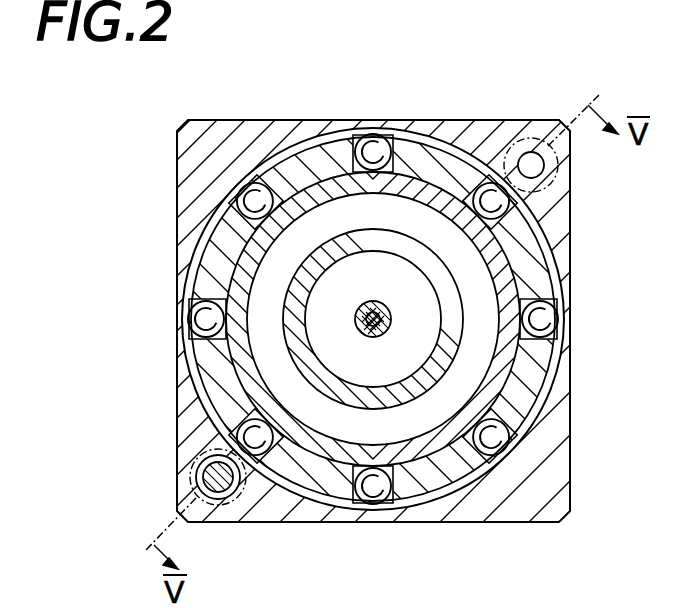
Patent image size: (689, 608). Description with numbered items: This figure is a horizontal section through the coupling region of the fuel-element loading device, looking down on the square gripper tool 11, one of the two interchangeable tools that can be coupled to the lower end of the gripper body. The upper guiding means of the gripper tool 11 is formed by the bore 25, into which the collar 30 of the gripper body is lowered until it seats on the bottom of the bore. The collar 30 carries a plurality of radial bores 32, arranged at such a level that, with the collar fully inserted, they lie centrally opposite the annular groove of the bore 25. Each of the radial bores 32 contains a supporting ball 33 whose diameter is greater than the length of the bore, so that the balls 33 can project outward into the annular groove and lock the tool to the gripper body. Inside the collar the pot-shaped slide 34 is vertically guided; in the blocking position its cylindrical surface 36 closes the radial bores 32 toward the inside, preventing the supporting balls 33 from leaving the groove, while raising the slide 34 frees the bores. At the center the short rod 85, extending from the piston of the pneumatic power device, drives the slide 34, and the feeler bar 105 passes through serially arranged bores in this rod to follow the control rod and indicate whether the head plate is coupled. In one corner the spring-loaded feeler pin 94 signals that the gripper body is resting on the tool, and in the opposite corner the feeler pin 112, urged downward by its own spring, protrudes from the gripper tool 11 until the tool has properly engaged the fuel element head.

The gripper tool 11 is at (229, 133).
The bore 25 is at (302, 148).
The collar 30 is at (247, 272).
The radial bores 32 is at (473, 200).
The supporting balls 33 is at (268, 205).
The slide 34 is at (269, 387).
The cylindrical surface 36 is at (426, 164).
The rod 85 is at (362, 311).
The feeler pin 94 is at (531, 165).
The feeler bar 105 is at (382, 328).
The feeler pin 112 is at (223, 488).